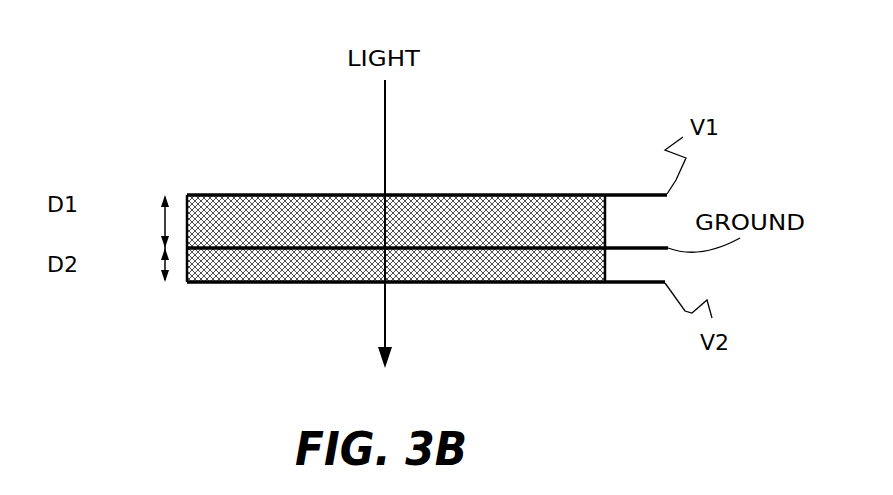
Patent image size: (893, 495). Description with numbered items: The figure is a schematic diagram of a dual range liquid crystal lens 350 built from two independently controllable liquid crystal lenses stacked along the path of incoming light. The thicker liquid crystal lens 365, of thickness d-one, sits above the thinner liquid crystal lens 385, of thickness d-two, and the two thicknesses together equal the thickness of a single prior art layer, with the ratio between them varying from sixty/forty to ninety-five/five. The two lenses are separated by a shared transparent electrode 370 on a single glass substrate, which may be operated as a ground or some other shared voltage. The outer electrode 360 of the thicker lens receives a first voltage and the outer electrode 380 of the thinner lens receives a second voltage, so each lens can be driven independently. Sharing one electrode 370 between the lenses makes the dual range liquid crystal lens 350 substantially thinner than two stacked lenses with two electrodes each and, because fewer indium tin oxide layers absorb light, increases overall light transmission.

The dual range liquid crystal lens 350 is at (186, 73).
The electrode 360 is at (186, 193).
The liquid crystal lens 365 is at (253, 208).
The shared transparent electrode 370 is at (157, 249).
The electrode 380 is at (186, 284).
The liquid crystal lens 385 is at (263, 285).